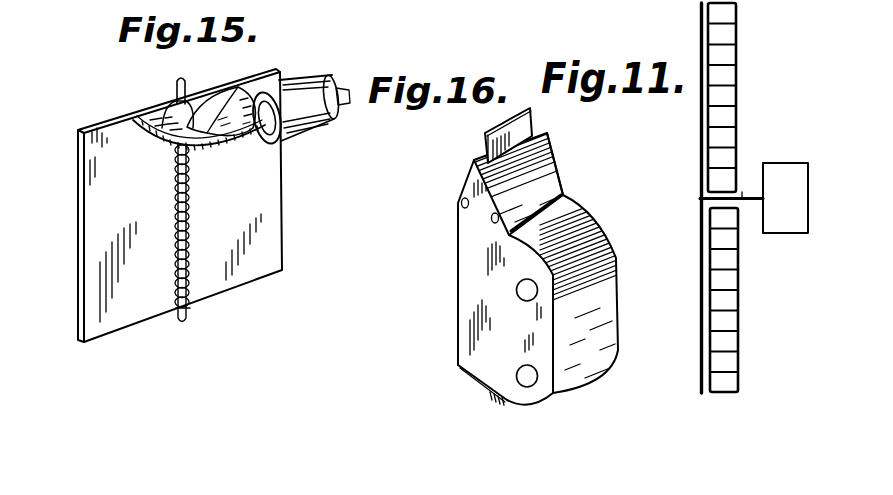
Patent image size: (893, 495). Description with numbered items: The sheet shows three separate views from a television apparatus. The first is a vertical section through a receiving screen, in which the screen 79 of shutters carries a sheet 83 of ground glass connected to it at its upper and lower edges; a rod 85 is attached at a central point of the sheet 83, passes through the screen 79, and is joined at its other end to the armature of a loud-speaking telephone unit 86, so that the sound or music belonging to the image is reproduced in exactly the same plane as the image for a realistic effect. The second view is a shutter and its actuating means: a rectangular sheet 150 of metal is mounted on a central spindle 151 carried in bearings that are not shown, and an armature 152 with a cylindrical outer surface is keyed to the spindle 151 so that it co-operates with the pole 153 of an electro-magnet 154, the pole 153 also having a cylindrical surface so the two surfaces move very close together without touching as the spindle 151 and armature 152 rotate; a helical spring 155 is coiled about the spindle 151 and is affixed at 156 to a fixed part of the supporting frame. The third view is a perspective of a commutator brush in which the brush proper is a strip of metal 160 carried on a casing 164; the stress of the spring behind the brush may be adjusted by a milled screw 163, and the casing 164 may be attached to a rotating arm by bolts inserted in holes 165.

In FIG. 15, the rectangular sheet 150 is at (86, 178).
In FIG. 15, the central spindle 151 is at (186, 100).
In FIG. 15, the armature 152 is at (138, 128).
In FIG. 15, the pole 153 is at (237, 133).
In FIG. 15, the electro-magnet 154 is at (292, 92).
In FIG. 15, the helical spring 155 is at (178, 248).
In FIG. 15, the spring fixing point 156 is at (186, 302).
In FIG. 16, the strip of metal 160 is at (524, 118).
In FIG. 16, the milled screw 163 is at (500, 404).
In FIG. 16, the casing 164 is at (488, 310).
In FIG. 16, the holes 165 is at (572, 365).
In FIG. 11, the screen 79 is at (737, 56).
In FIG. 11, the sheet of ground glass 83 is at (700, 155).
In FIG. 11, the rod 85 is at (742, 197).
In FIG. 11, the loud-speaking telephone unit 86 is at (808, 235).